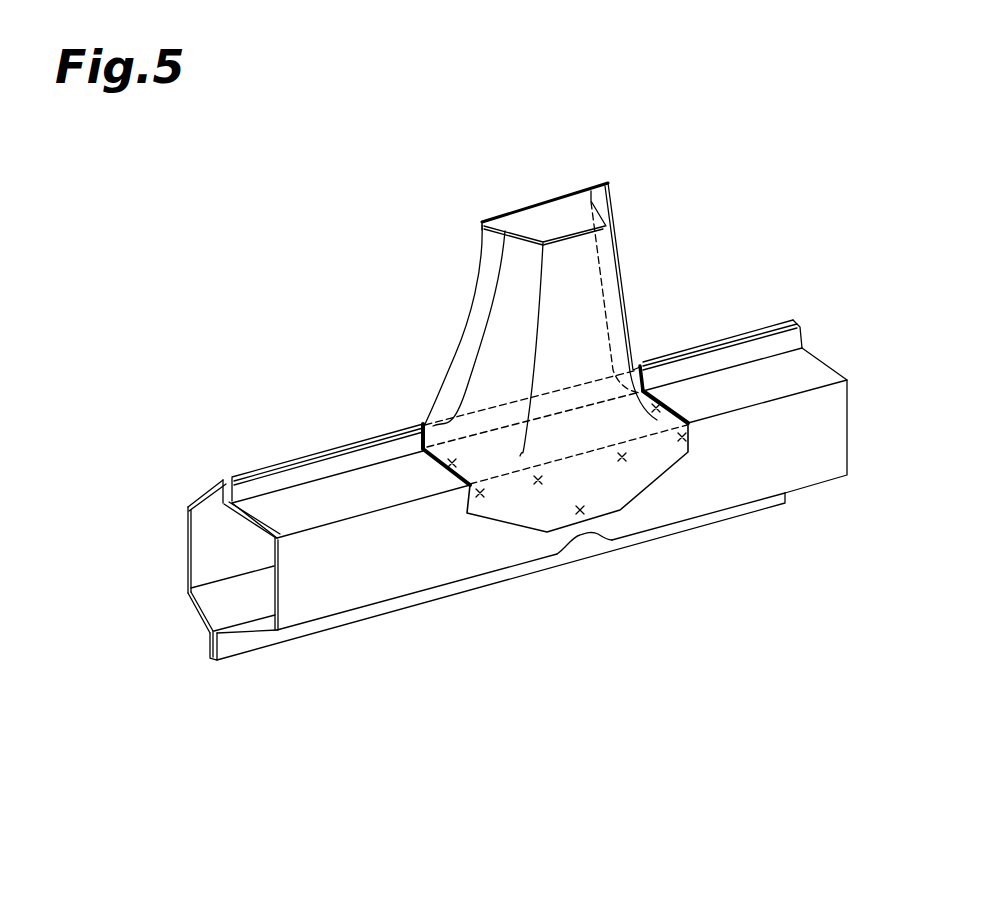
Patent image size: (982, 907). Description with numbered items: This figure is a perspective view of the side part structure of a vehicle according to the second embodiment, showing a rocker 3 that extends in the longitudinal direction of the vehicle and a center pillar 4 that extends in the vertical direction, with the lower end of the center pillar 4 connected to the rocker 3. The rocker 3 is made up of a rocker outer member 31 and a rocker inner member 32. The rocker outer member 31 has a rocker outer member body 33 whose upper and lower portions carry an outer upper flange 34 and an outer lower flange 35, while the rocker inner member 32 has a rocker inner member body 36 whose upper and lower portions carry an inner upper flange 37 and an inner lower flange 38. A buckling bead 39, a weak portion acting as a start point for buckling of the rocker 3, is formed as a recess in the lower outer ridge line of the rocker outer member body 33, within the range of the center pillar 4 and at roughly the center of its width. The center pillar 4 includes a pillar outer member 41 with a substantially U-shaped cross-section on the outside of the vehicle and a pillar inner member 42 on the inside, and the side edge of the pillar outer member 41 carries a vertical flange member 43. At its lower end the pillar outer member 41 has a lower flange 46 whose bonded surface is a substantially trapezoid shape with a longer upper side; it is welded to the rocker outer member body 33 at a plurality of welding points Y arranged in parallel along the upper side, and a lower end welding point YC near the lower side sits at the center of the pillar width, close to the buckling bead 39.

The rocker 3 is at (384, 423).
The center pillar 4 is at (628, 260).
The rocker outer member 31 is at (440, 597).
The rocker inner member 32 is at (190, 500).
The rocker outer member body 33 is at (323, 598).
The outer upper flange 34 is at (325, 465).
The outer lower flange 35 is at (720, 517).
The rocker inner member body 36 is at (215, 557).
The inner upper flange 37 is at (230, 474).
The inner lower flange 38 is at (206, 638).
The buckling bead 39 is at (590, 540).
The pillar outer member 41 is at (588, 345).
The pillar inner member 42 is at (548, 213).
The vertical flange member 43 is at (477, 342).
The lower flange 46 is at (508, 508).
The welding points Y is at (452, 463).
The lower end welding point YC is at (583, 510).